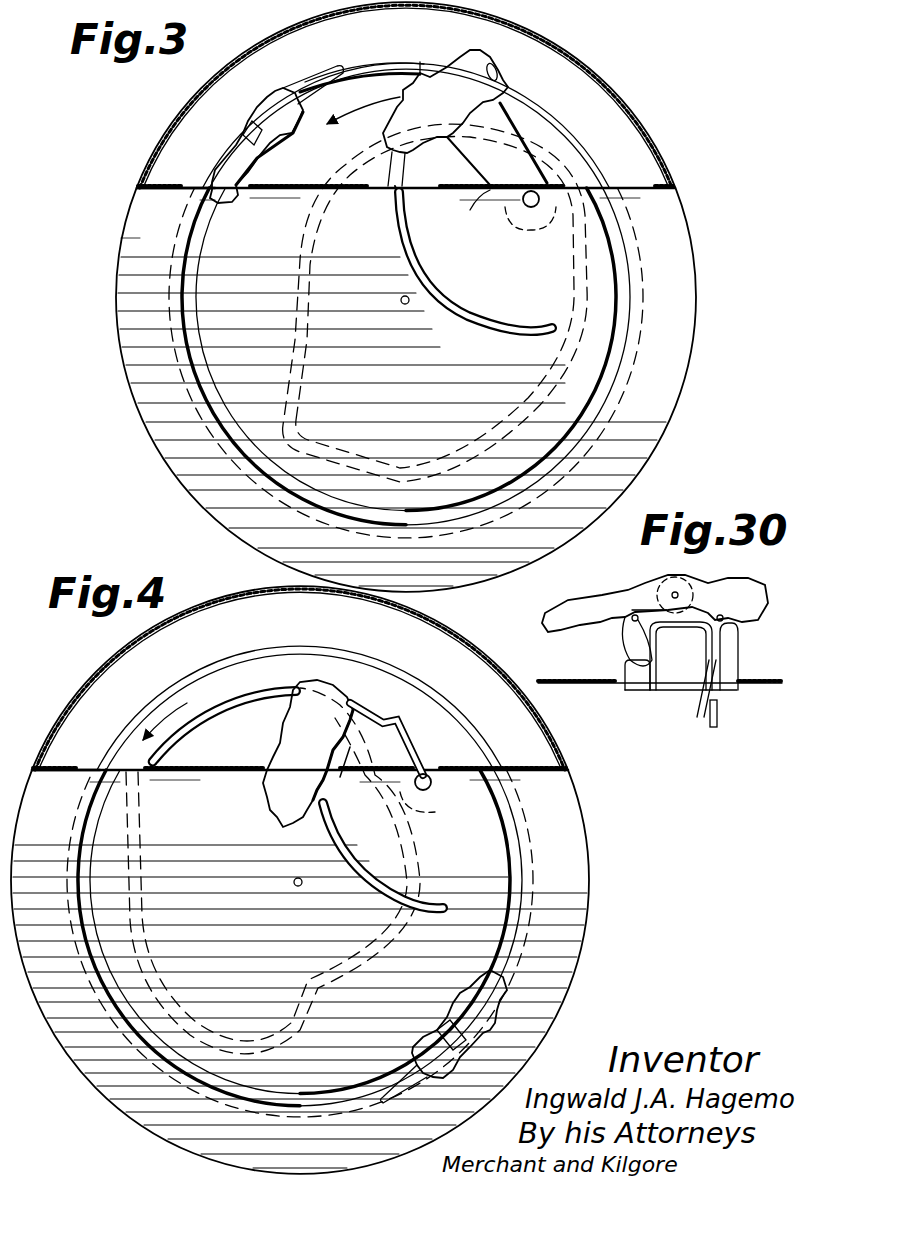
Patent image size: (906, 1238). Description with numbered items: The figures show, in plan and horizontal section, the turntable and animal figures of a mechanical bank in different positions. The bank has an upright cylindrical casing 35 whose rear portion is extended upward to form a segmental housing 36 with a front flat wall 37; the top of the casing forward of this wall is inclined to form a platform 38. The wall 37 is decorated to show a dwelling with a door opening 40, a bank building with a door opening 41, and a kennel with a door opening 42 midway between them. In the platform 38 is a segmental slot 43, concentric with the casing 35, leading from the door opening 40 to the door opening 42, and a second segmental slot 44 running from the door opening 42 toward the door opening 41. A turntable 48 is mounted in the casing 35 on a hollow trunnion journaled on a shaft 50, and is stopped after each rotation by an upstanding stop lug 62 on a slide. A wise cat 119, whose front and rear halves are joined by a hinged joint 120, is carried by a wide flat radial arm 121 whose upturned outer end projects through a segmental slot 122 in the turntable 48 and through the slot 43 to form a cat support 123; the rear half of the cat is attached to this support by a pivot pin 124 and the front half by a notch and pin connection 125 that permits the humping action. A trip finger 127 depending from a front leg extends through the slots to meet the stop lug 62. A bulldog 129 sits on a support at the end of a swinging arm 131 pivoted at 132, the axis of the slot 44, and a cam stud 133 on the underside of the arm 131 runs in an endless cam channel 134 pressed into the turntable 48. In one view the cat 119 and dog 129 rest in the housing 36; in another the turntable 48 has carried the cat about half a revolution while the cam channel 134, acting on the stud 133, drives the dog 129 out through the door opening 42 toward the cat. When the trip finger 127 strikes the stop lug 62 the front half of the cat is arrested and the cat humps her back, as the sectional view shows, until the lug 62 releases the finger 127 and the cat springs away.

In FIG. 3, the casing 35 is at (699, 346).
In FIG. 4, the casing 35 is at (602, 878).
In FIG. 3, the segmental housing 36 is at (633, 120).
In FIG. 4, the segmental housing 36 is at (470, 668).
In FIG. 3, the front flat wall 37 is at (483, 209).
In FIG. 3, the platform 38 is at (427, 297).
In FIG. 4, the platform 38 is at (300, 880).
In FIG. 3, the door opening 40 is at (243, 193).
In FIG. 4, the door opening 40 is at (130, 772).
In FIG. 3, the door opening 41 is at (587, 203).
In FIG. 4, the door opening 41 is at (512, 772).
In FIG. 3, the door opening 42 is at (430, 190).
In FIG. 4, the door opening 42 is at (300, 818).
In FIG. 3, the segmental slot 43 is at (615, 352).
In FIG. 4, the segmental slot 43 is at (518, 878).
In FIG. 3, the segmental slot 44 is at (470, 312).
In FIG. 4, the segmental slot 44 is at (350, 900).
In FIG. 3, the turntable 48 is at (573, 170).
In FIG. 4, the turntable 48 is at (299, 714).
In FIG. 30, the turntable 48 is at (598, 688).
In FIG. 3, the shaft 50 is at (405, 304).
In FIG. 4, the shaft 50 is at (298, 886).
In FIG. 30, the stop lug 62 is at (716, 728).
In FIG. 3, the wise cat 119 is at (273, 150).
In FIG. 4, the wise cat 119 is at (490, 1030).
In FIG. 30, the wise cat 119 is at (640, 592).
In FIG. 30, the hinged joint 120 is at (678, 595).
In FIG. 30, the arm 121 is at (670, 692).
In FIG. 3, the segmental slot 122 is at (380, 80).
In FIG. 30, the segmental slot 122 is at (770, 688).
In FIG. 30, the cat support 123 is at (727, 655).
In FIG. 30, the pivot pin 124 is at (632, 620).
In FIG. 30, the notch and pin connection 125 is at (724, 616).
In FIG. 30, the trip finger 127 is at (699, 718).
In FIG. 3, the bulldog 129 is at (500, 86).
In FIG. 4, the bulldog 129 is at (290, 780).
In FIG. 3, the swinging arm 131 is at (480, 157).
In FIG. 4, the swinging arm 131 is at (347, 781).
In FIG. 3, the pivot 132 is at (522, 215).
In FIG. 4, the pivot 132 is at (432, 785).
In FIG. 3, the cam stud 133 is at (550, 137).
In FIG. 4, the cam stud 133 is at (383, 752).
In FIG. 3, the cam channel 134 is at (395, 190).
In FIG. 4, the cam channel 134 is at (240, 715).